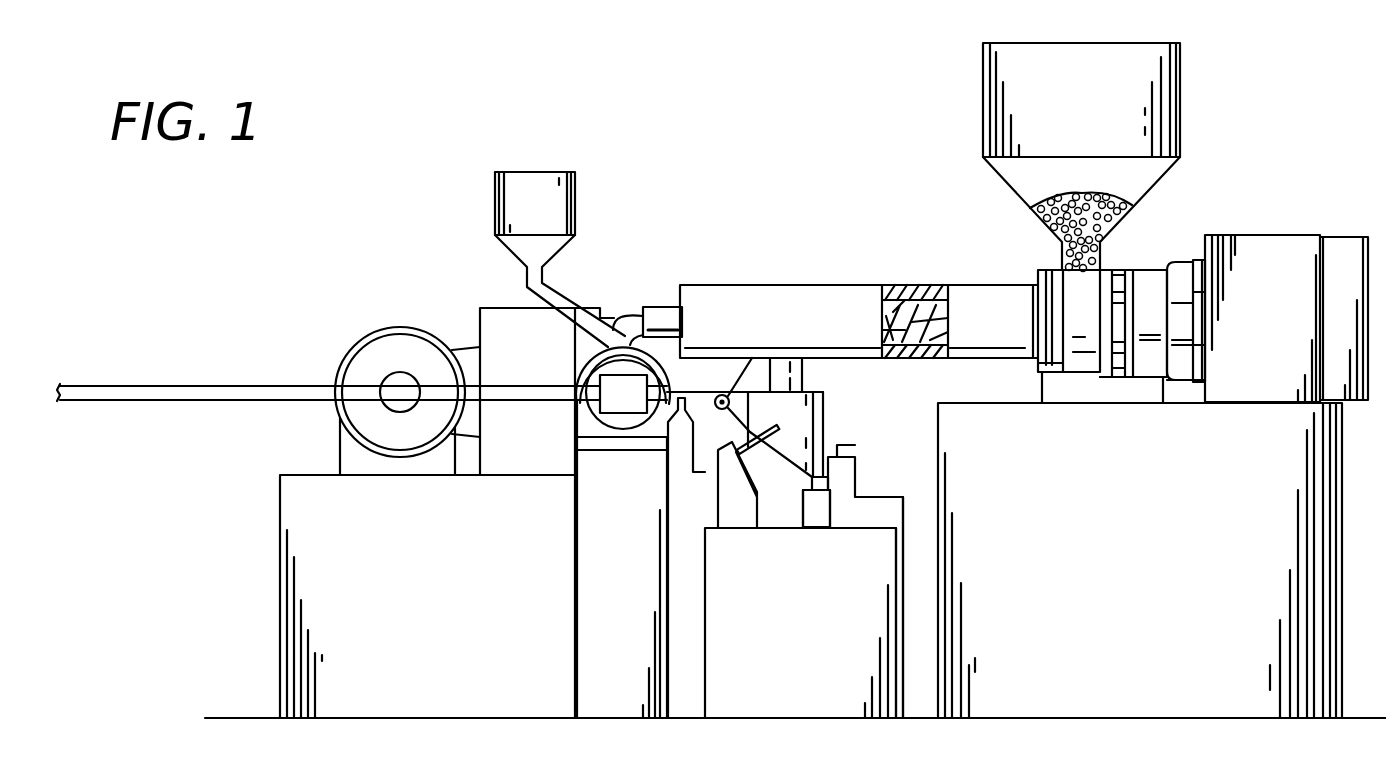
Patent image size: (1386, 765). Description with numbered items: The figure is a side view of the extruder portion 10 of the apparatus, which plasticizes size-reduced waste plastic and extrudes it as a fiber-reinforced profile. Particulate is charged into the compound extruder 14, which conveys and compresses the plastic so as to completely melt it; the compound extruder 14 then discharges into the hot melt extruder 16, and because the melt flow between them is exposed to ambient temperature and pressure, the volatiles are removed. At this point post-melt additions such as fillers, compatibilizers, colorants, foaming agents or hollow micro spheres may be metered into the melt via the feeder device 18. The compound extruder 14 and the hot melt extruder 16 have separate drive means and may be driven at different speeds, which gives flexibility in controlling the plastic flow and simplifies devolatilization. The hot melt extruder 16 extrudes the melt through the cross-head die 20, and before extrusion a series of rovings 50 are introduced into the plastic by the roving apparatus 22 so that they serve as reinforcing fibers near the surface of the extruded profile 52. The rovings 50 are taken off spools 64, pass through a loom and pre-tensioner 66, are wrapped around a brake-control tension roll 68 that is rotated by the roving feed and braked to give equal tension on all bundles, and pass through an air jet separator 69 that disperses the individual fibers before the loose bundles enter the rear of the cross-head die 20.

The extruder portion 10 is at (878, 105).
The compound extruder 14 is at (842, 285).
The hot melt extruder 16 is at (598, 366).
The feeder device 18 is at (578, 196).
The cross-head die 20 is at (624, 412).
The roving apparatus 22 is at (928, 450).
The rovings 50 is at (704, 391).
The extruded profile 52 is at (182, 388).
The spools 64 is at (818, 520).
The loom and pre-tensioner 66 is at (779, 428).
The brake-control tension roll 68 is at (752, 358).
The air jet separator 69 is at (681, 457).